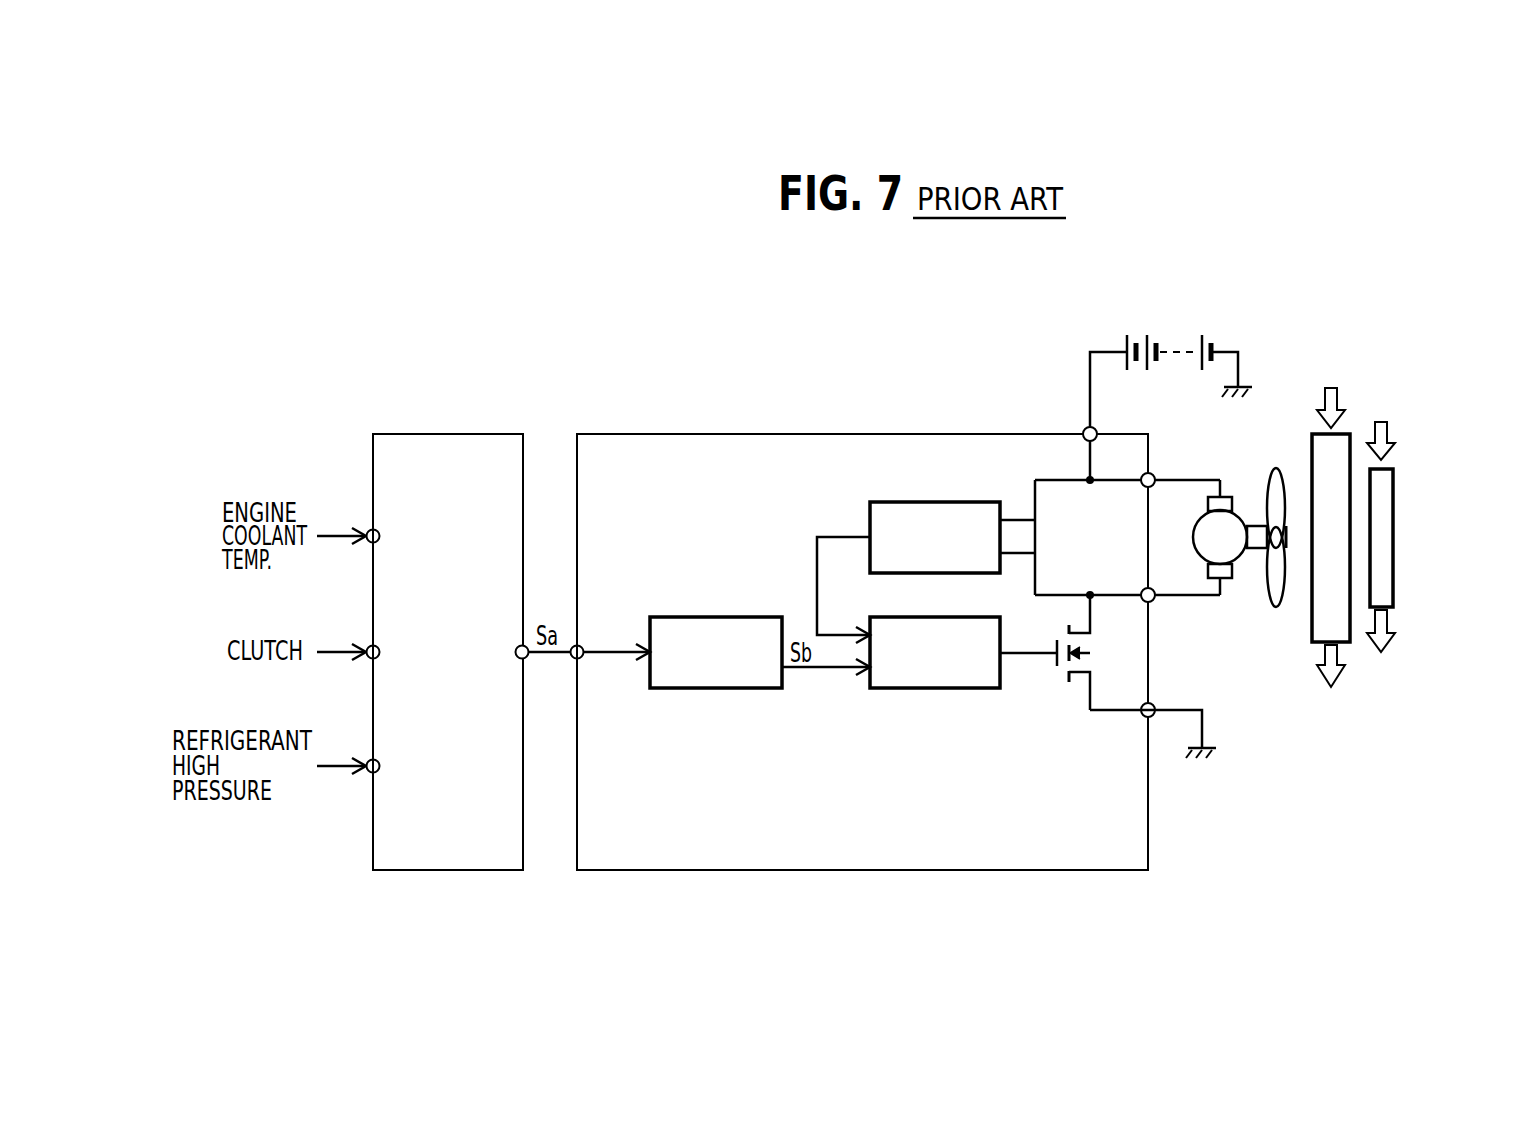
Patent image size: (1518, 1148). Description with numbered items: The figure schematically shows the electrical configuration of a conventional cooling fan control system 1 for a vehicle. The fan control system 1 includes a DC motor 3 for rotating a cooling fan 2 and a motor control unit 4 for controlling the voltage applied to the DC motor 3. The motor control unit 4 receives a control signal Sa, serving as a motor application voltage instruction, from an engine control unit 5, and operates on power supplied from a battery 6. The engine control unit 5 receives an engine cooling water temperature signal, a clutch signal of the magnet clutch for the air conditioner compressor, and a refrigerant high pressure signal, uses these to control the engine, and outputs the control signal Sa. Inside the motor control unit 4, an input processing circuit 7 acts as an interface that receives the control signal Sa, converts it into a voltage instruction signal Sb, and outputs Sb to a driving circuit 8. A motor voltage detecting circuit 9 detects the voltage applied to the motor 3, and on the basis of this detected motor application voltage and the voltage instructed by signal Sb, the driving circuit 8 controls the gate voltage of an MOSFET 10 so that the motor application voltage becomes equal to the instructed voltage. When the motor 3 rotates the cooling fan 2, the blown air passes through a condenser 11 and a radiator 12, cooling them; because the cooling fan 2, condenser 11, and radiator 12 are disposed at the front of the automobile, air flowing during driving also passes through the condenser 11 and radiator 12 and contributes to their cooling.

The fan control system 1 is at (881, 377).
The cooling fan 2 is at (1272, 470).
The DC motor 3 is at (1193, 540).
The motor control unit 4 is at (830, 434).
The engine control unit 5 is at (445, 434).
The battery 6 is at (1150, 336).
The input processing circuit 7 is at (712, 617).
The driving circuit 8 is at (932, 688).
The motor voltage detecting circuit 9 is at (953, 502).
The MOSFET 10 is at (1056, 668).
The condenser 11 is at (1395, 602).
The radiator 12 is at (1312, 627).